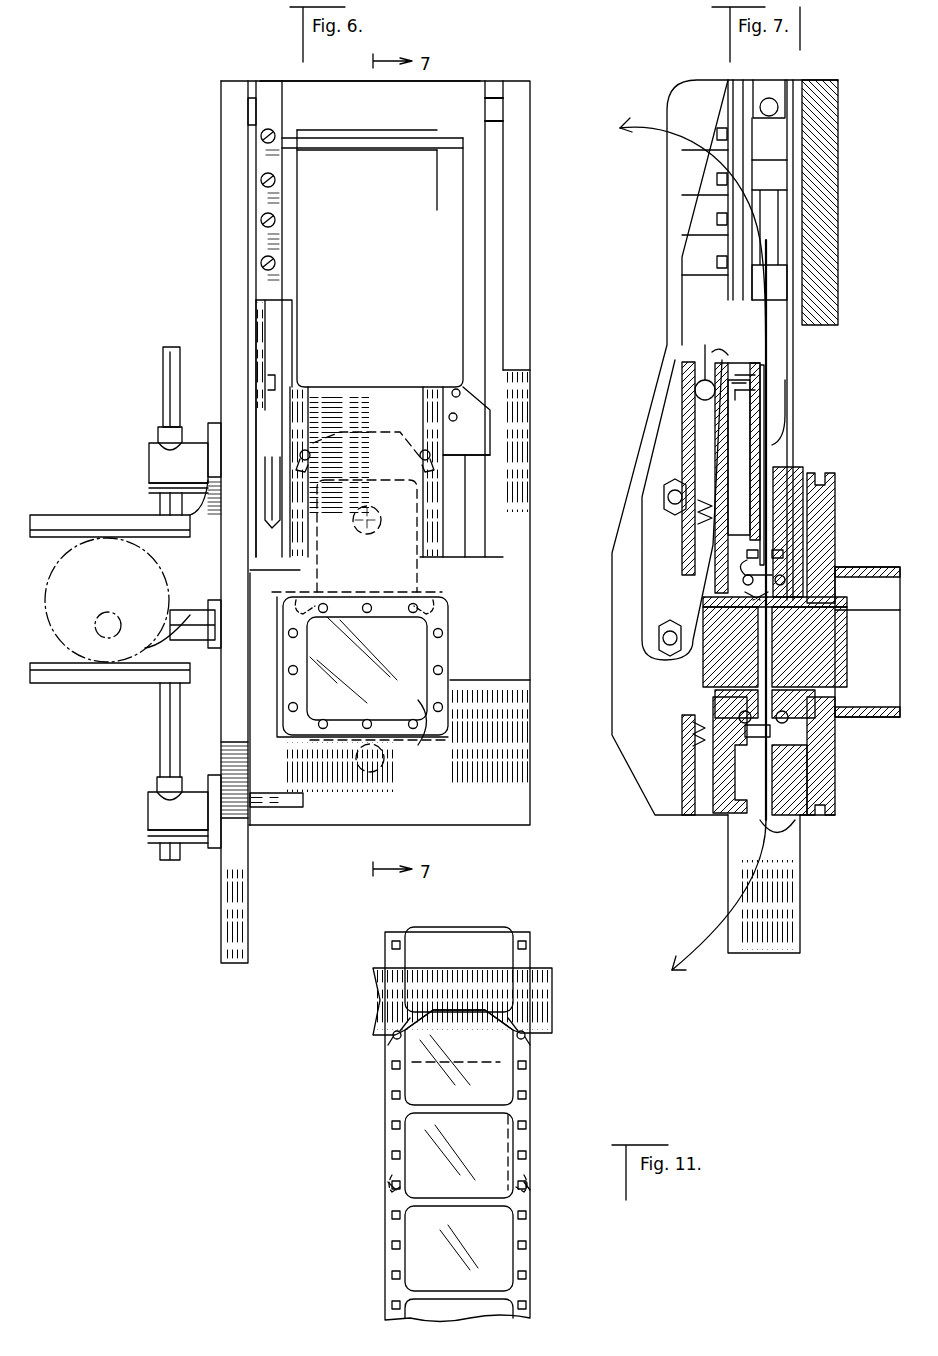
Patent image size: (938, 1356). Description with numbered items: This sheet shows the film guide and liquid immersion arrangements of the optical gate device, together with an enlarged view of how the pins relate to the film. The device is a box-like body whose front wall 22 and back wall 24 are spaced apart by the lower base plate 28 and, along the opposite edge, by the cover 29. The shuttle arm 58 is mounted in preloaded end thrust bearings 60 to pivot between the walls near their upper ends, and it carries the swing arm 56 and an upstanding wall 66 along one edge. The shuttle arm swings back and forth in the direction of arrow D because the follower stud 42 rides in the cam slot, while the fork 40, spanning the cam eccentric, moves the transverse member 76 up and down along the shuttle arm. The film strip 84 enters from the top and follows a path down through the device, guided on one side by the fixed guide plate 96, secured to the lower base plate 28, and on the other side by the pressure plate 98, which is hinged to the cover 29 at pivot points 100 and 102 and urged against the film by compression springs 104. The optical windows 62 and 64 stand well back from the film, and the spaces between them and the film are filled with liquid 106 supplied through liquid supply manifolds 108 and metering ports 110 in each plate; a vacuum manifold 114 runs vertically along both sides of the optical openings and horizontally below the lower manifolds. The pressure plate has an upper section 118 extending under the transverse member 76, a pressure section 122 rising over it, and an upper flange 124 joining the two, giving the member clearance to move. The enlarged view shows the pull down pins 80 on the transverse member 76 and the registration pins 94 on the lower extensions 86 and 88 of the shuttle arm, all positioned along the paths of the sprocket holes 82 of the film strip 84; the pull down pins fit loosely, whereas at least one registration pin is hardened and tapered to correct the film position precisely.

In FIG. 6, the front wall 22 is at (524, 296).
In FIG. 7, the front wall 22 is at (725, 516).
In FIG. 6, the back wall 24 is at (232, 243).
In FIG. 7, the lower base plate 28 is at (838, 493).
In FIG. 6, the cover 29 is at (518, 726).
In FIG. 7, the cover 29 is at (685, 415).
In FIG. 6, the fork 40 is at (100, 523).
In FIG. 6, the follower stud 42 is at (178, 650).
In FIG. 6, the swing arm 56 is at (282, 247).
In FIG. 6, the shuttle arm 58 is at (300, 92).
In FIG. 7, the shuttle arm 58 is at (795, 257).
In FIG. 6, the preloaded end thrust bearings 60 is at (252, 103).
In FIG. 7, the preloaded end thrust bearings 60 is at (769, 98).
In FIG. 6, the optical window 62 is at (433, 738).
In FIG. 7, the optical window 62 is at (708, 652).
In FIG. 7, the optical window 64 is at (890, 620).
In FIG. 6, the upstanding wall 66 is at (463, 356).
In FIG. 7, the transverse member 76 is at (760, 425).
In FIG. 11, the transverse member 76 is at (540, 968).
In FIG. 7, the film pull down pins 80 is at (775, 450).
In FIG. 11, the film pull down pins 80 is at (390, 1032).
In FIG. 11, the sprocket holes 82 is at (390, 1094).
In FIG. 7, the film strip 84 is at (640, 128).
In FIG. 11, the film strip 84 is at (387, 1112).
In FIG. 6, the extension 86 is at (340, 570).
In FIG. 11, the extension 86 is at (392, 1192).
In FIG. 6, the extension 88 is at (418, 575).
In FIG. 11, the extension 88 is at (524, 1192).
In FIG. 6, the registration pins 94 is at (315, 612).
In FIG. 7, the registration pins 94 is at (888, 605).
In FIG. 11, the registration pins 94 is at (395, 1192).
In FIG. 7, the fixed guide plate 96 is at (795, 470).
In FIG. 6, the pressure plate 98 is at (498, 625).
In FIG. 7, the pressure plate 98 is at (718, 550).
In FIG. 6, the pivot point 100 is at (215, 640).
In FIG. 6, the pivot point 102 is at (265, 812).
In FIG. 7, the compression springs 104 is at (680, 490).
In FIG. 7, the liquid 106 is at (795, 660).
In FIG. 7, the liquid supply manifolds 108 is at (790, 553).
In FIG. 7, the metering ports 110 is at (770, 610).
In FIG. 7, the vacuum manifold 114 is at (760, 550).
In FIG. 7, the upper section 118 is at (758, 405).
In FIG. 7, the pressure section 122 is at (728, 348).
In FIG. 7, the upper flange 124 is at (758, 365).
In FIG. 7, the arrow D is at (806, 342).